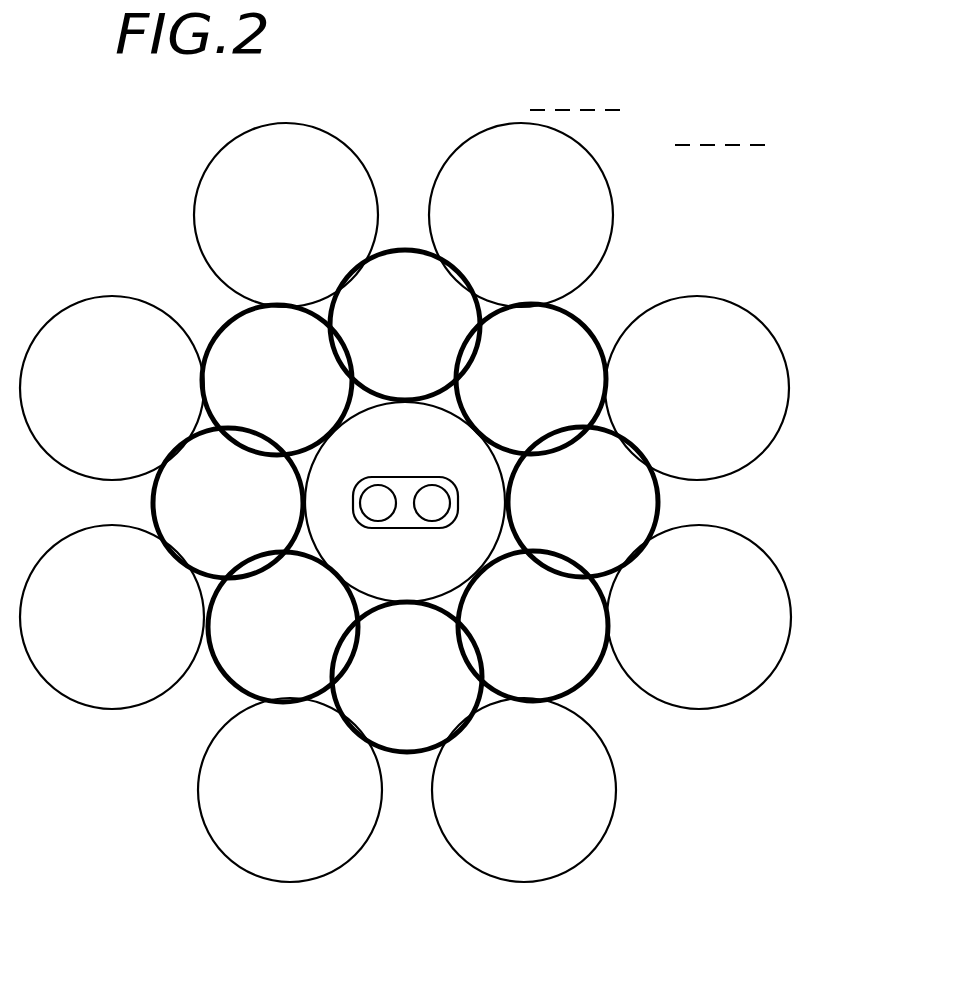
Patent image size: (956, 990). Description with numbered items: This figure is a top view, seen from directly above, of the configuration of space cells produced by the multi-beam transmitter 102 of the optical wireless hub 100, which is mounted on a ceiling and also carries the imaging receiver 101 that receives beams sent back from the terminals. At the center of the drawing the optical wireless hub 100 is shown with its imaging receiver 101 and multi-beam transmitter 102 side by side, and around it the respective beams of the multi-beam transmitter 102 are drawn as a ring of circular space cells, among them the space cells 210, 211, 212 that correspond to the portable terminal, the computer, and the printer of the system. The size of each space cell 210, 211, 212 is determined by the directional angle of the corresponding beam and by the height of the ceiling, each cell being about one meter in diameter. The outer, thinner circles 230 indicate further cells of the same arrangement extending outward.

The optical wireless hub 100 is at (402, 477).
The imaging receiver 101 is at (378, 505).
The multi-beam transmitter 102 is at (432, 505).
The space cell 210 is at (237, 643).
The space cell 211 is at (397, 712).
The space cell 212 is at (561, 663).
The outer tension member 230 is at (518, 180).